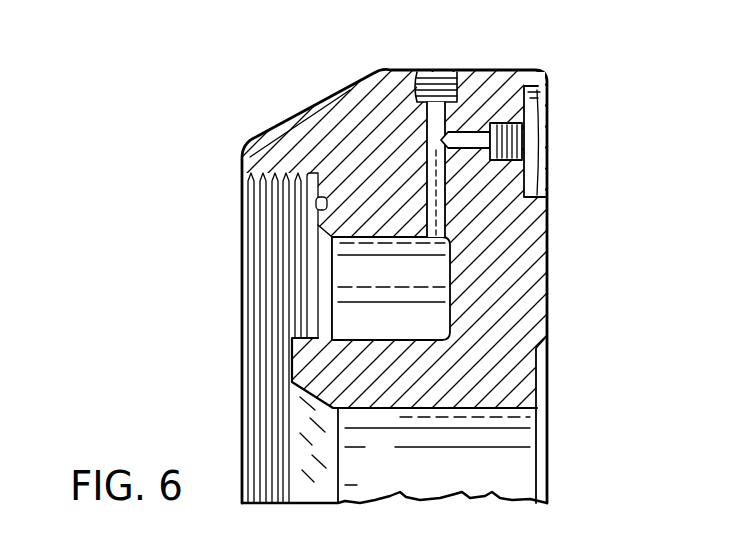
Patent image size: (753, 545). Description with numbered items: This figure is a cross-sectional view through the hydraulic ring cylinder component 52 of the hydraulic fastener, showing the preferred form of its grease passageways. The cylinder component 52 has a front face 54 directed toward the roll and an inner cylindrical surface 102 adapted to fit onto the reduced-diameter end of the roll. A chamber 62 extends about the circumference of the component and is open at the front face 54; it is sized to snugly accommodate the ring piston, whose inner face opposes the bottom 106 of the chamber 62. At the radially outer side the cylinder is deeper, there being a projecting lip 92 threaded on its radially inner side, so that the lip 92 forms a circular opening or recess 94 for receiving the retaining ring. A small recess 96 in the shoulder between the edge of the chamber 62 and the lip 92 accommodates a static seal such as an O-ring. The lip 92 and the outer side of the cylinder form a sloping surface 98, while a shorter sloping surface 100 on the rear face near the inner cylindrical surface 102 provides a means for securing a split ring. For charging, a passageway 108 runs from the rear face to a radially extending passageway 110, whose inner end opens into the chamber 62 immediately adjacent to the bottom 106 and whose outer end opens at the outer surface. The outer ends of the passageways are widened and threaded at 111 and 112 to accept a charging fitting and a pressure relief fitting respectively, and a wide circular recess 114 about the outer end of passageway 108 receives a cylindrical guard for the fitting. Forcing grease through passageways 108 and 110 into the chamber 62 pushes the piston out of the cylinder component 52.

The hydraulic ring cylinder component 52 is at (396, 251).
The front face 54 is at (241, 358).
The chamber 62 is at (391, 288).
The projecting lip 92 is at (262, 157).
The circular opening or recess 94 is at (313, 197).
The small recess 96 is at (313, 209).
The sloping surface 98 is at (316, 106).
The shorter sloping surface 100 is at (550, 348).
The inner cylindrical surface 102 is at (387, 410).
The opposing face or bottom of the chamber 106 is at (326, 294).
The passageway 108 is at (472, 132).
The radially extending passageway 110 is at (425, 162).
The threaded outer end of passageway 108 (charging fitting opening) 111 is at (503, 122).
The threaded outer end of passageway 110 (pressure relief opening) 112 is at (397, 72).
The wide circular recess 114 is at (552, 124).